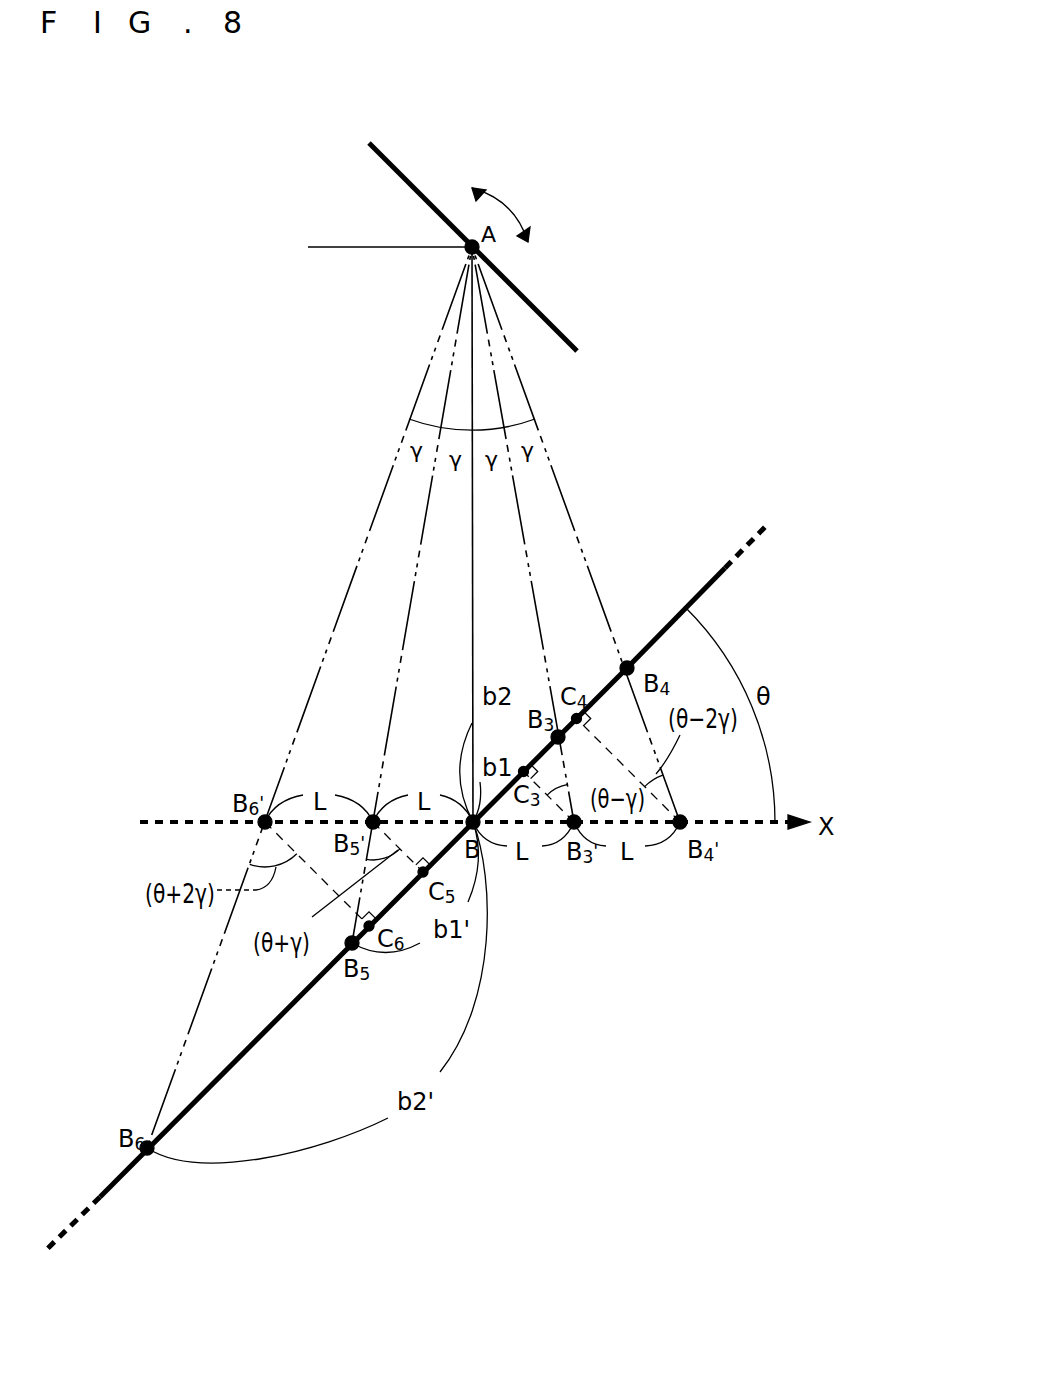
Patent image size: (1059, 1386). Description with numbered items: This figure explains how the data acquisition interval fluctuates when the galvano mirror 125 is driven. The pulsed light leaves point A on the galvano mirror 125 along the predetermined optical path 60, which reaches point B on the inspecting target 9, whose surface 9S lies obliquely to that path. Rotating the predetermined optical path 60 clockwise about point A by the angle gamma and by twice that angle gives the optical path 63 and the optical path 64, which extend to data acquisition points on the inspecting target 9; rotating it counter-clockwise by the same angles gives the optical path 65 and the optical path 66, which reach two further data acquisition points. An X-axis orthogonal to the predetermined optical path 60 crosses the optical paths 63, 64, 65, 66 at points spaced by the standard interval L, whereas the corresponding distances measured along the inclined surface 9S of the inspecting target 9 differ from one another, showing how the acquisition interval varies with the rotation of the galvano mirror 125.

The galvano mirror 125 is at (415, 185).
The predetermined optical path 60 is at (472, 522).
The optical path 63 is at (530, 567).
The optical path 64 is at (597, 582).
The optical path 65 is at (410, 567).
The optical path 66 is at (347, 585).
The inspecting target 9 is at (705, 590).
The projection surface 9S is at (698, 597).